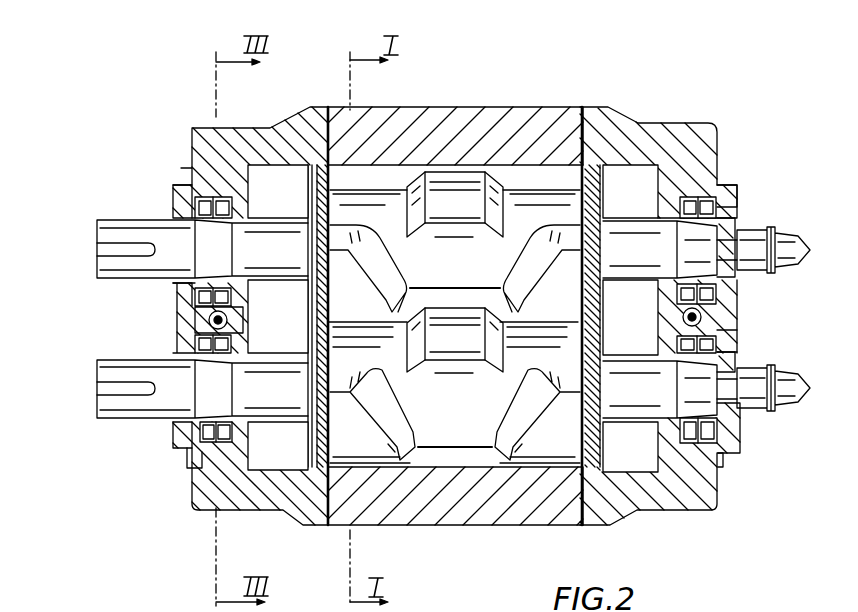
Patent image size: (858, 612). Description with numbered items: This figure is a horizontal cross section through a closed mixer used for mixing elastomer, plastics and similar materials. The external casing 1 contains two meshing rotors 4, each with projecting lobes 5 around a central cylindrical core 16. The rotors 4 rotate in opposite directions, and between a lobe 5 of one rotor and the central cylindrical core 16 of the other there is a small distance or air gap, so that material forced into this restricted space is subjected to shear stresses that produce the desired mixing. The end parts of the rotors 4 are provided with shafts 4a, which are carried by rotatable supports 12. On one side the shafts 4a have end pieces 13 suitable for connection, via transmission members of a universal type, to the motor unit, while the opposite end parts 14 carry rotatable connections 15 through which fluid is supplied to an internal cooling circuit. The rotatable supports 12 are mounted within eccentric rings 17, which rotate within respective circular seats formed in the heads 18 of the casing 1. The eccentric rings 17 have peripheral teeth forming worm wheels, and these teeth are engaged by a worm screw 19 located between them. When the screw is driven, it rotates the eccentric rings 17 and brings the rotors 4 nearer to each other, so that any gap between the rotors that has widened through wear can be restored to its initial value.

The external casing 1 is at (472, 510).
The rotors 4 is at (448, 285).
The shafts 4a is at (280, 223).
The projecting lobes 5 is at (500, 185).
The rotatable supports 12 is at (172, 197).
The end pieces 13 is at (100, 272).
The opposite end parts 14 is at (740, 268).
The rotatable connections 15 is at (800, 240).
The central cylindrical core 16 is at (410, 190).
The eccentric rings 17 is at (177, 310).
The heads 18 is at (217, 497).
The worm screw 19 is at (172, 334).